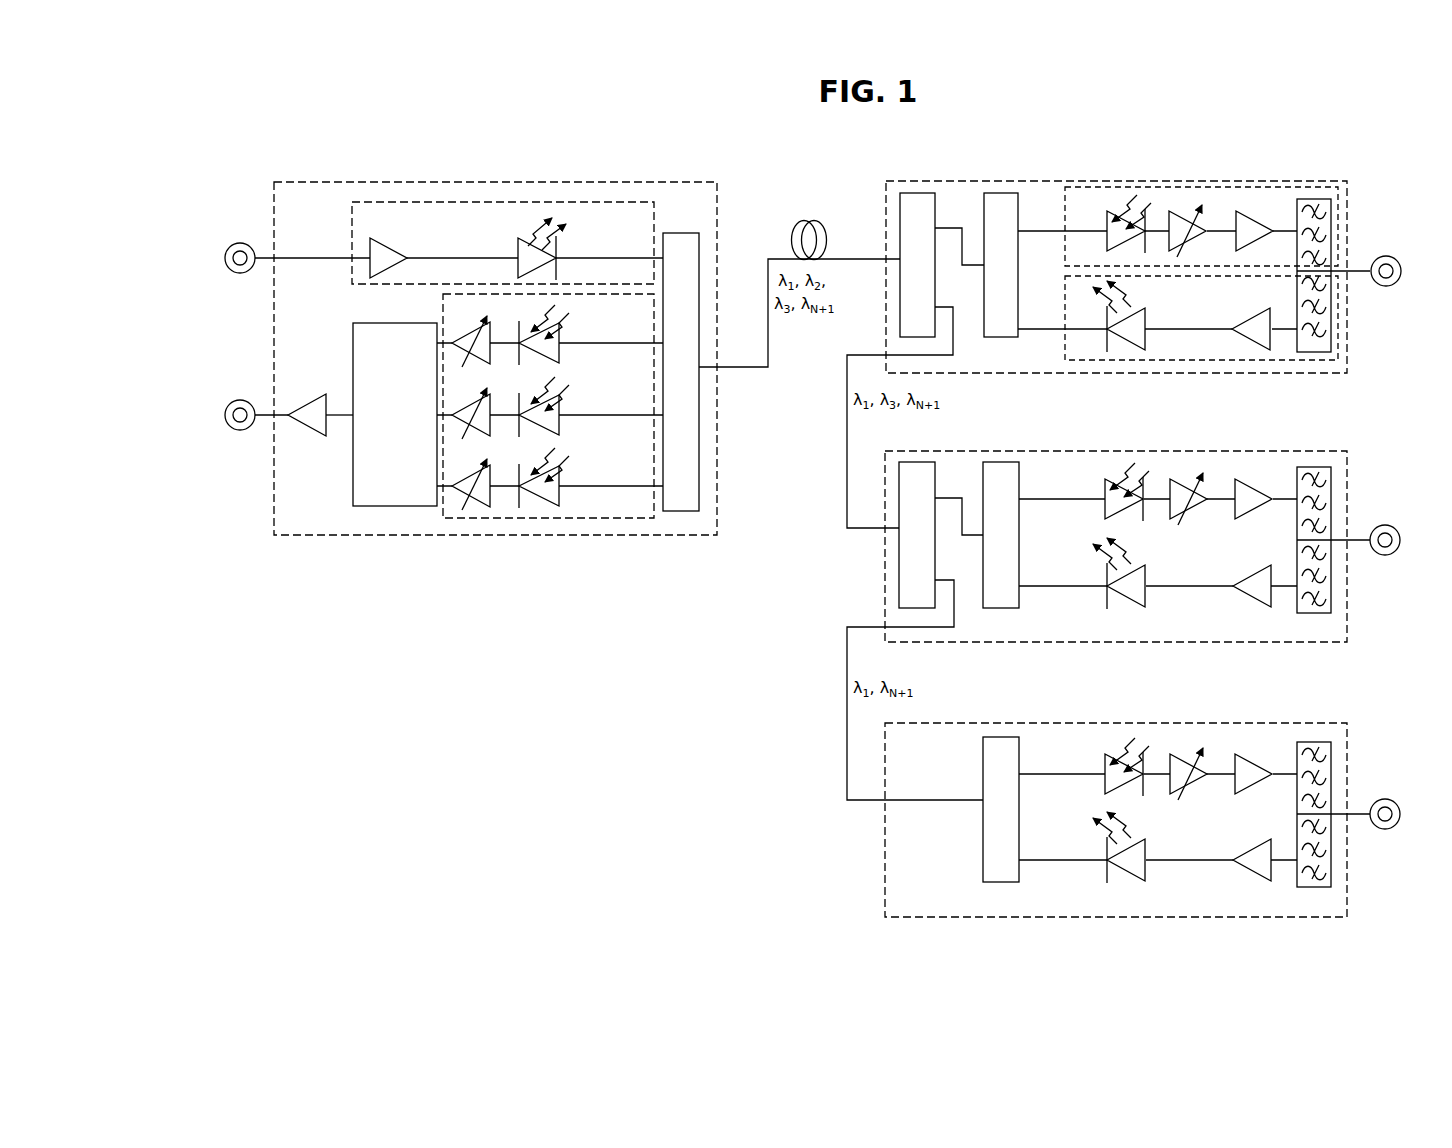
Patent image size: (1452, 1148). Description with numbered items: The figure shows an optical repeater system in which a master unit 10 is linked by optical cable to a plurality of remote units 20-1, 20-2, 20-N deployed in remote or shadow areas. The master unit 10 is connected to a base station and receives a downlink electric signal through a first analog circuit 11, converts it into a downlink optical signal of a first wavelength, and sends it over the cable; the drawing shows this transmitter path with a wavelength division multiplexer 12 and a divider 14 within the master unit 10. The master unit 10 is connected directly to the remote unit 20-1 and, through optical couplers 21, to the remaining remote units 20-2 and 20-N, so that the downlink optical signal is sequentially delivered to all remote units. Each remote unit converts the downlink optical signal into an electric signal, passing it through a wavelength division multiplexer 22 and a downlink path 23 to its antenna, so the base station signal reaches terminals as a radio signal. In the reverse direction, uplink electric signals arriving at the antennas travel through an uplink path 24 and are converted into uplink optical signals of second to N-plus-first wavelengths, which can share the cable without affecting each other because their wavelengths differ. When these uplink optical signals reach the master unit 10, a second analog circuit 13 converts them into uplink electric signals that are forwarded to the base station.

The master unit 10 is at (593, 182).
The first analog circuit 11 is at (455, 201).
The wavelength division multiplexer (WDM) of main unit 12 is at (700, 453).
The second analog circuit 13 is at (587, 518).
The 1:N divider 14 is at (393, 507).
The remote unit 20-1 is at (1253, 181).
The remote unit 20-2 is at (1347, 602).
The remote unit 20-N is at (1347, 885).
The optical coupler 21 is at (915, 193).
The wavelength division multiplexer (WDM) of remote unit 22 is at (1000, 193).
The downlink path (photodiode, attenuator, amplifier) 23 is at (1338, 214).
The uplink path (laser diode, amplifier) 24 is at (1338, 337).